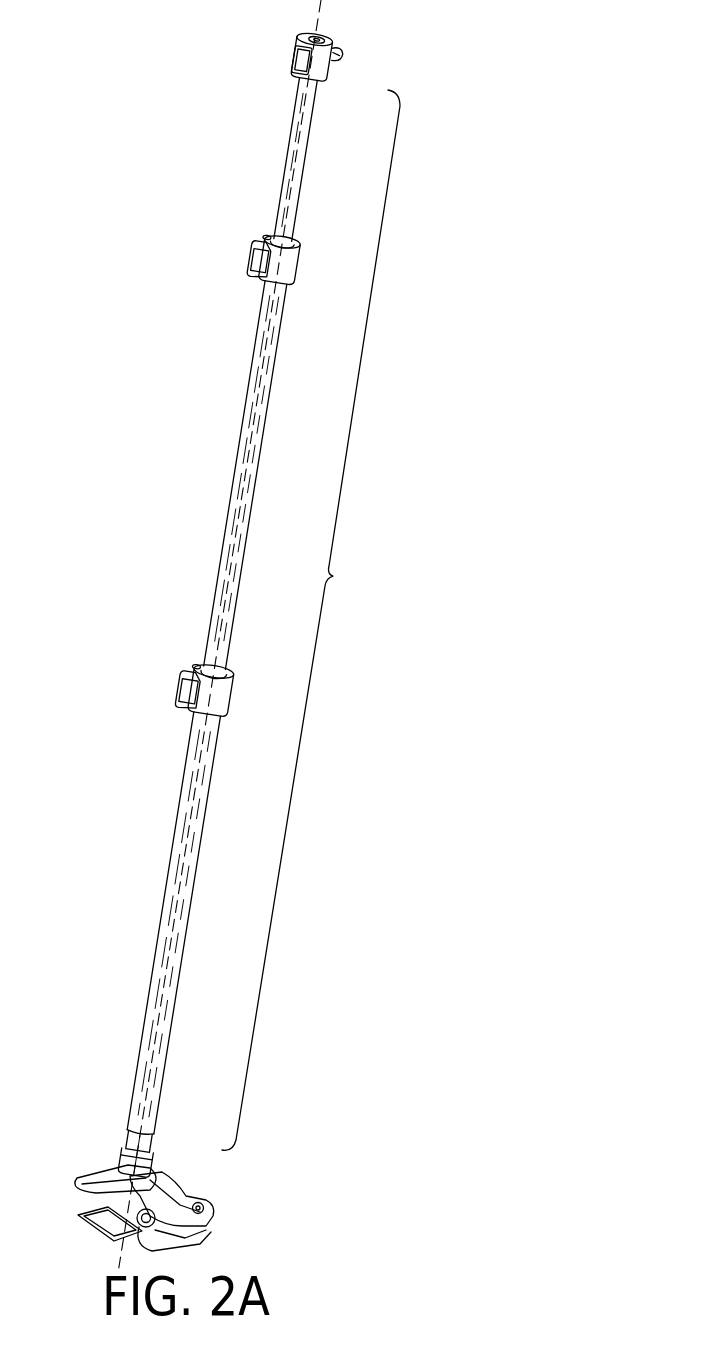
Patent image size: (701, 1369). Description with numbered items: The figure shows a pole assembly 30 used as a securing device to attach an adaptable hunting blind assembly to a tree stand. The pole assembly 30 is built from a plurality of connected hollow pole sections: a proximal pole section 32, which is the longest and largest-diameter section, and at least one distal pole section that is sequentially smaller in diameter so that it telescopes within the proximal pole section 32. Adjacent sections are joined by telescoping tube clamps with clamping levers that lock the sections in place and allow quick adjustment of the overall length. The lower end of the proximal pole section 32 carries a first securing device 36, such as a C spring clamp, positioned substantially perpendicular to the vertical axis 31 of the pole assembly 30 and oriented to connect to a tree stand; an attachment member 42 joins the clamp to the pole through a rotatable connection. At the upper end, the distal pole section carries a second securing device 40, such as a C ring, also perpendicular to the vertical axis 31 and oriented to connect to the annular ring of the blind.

The pole assembly 30 is at (311, 620).
The vertical axis 31 is at (243, 506).
The proximal pole section 32 is at (161, 917).
The first securing device 36 is at (120, 1168).
The second securing device 40 is at (298, 62).
The attachment member 42 is at (175, 1166).